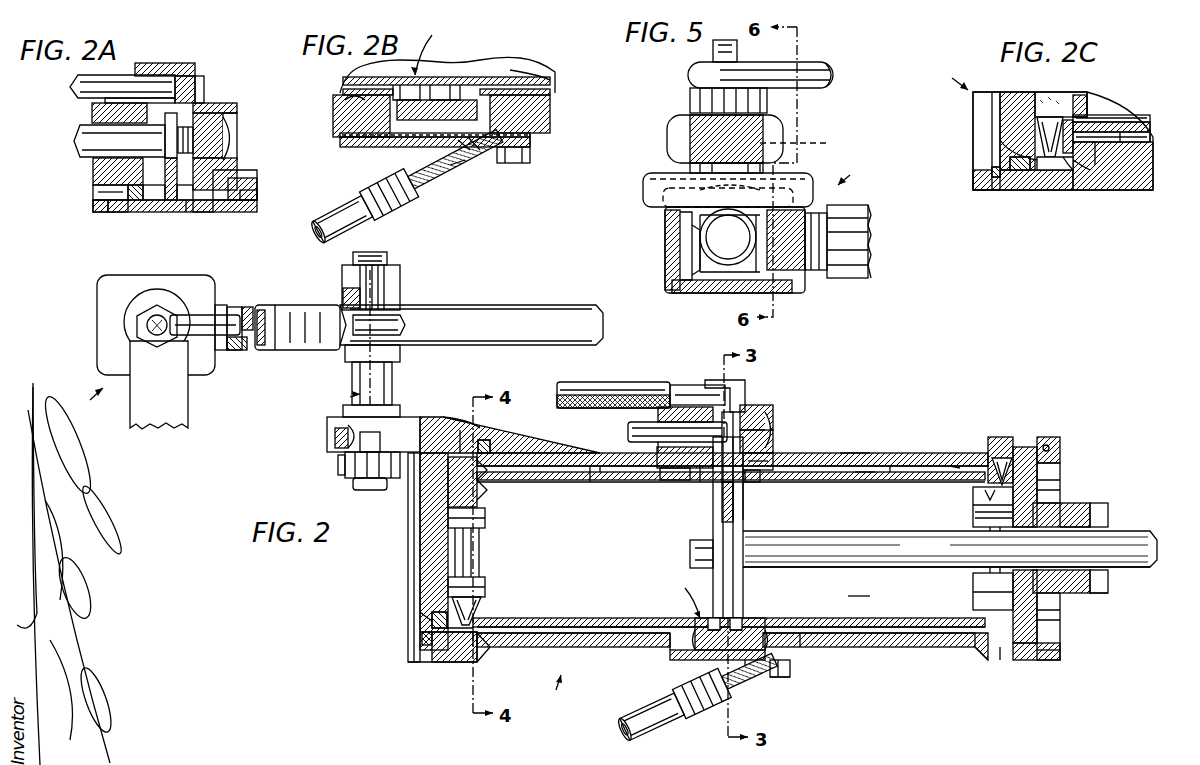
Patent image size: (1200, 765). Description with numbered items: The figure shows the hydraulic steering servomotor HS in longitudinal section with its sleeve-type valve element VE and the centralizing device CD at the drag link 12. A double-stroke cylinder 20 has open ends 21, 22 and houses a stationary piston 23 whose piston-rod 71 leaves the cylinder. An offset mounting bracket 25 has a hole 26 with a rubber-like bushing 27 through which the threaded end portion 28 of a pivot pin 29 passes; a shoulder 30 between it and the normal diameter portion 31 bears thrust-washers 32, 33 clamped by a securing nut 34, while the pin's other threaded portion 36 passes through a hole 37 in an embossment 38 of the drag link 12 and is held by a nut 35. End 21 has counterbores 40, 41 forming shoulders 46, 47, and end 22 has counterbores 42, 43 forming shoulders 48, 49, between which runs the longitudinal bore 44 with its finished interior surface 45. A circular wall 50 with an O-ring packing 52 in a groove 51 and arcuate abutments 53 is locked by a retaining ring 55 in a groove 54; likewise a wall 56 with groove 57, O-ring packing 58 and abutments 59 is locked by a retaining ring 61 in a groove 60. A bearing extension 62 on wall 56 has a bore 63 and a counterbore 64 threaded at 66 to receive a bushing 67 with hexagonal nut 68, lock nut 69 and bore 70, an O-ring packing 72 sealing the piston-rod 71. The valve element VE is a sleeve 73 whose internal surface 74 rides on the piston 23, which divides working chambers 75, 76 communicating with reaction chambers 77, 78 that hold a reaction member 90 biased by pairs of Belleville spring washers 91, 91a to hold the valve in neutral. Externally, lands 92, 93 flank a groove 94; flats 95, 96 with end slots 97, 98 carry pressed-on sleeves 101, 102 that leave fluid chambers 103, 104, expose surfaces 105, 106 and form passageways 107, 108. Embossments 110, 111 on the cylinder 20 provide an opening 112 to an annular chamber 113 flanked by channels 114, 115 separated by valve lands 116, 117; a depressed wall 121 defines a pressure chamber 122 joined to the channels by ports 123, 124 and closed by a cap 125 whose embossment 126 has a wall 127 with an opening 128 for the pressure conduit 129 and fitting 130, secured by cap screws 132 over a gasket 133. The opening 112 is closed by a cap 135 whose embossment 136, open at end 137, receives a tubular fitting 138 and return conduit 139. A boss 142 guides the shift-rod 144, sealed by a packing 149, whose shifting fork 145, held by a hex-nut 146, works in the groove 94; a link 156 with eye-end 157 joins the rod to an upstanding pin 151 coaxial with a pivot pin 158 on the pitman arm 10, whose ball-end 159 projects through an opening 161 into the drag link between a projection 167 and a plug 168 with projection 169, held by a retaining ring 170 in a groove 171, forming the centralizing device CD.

In FIG. 5, the steering pitman arm 10 is at (783, 130).
In FIG. 2, the steering pitman arm 10 is at (155, 428).
In FIG. 5, the drag link 12 is at (858, 245).
In FIG. 2, the drag link 12 is at (238, 350).
In FIG. 2, the double-stroke cylinder 20 is at (900, 645).
In FIG. 2C, the open end 21 is at (980, 100).
In FIG. 2, the open end 21 is at (411, 538).
In FIG. 2, the open end 22 is at (1060, 470).
In FIG. 2, the stationary piston 23 is at (743, 525).
In FIG. 2, the mounting bracket 25 is at (440, 417).
In FIG. 2, the hole 26 is at (345, 462).
In FIG. 2, the annular rubber-like bushing 27 is at (335, 438).
In FIG. 2, the reduced diameter threaded end portion 28 is at (362, 490).
In FIG. 2, the pivot pin 29 is at (345, 398).
In FIG. 2, the shoulder 30 is at (397, 405).
In FIG. 2, the normal diameter portion 31 is at (352, 374).
In FIG. 2, the thrust-washer 32 is at (327, 425).
In FIG. 2, the thrust-washer 33 is at (375, 452).
In FIG. 2, the securing nut 34 is at (340, 470).
In FIG. 2, the nut 35 is at (400, 276).
In FIG. 2, the reduced diameter threaded portion 36 is at (353, 258).
In FIG. 2, the hole 37 is at (350, 290).
In FIG. 2, the embossment 38 is at (395, 305).
In FIG. 2C, the counterbore 40 is at (980, 170).
In FIG. 2, the counterbore 40 is at (410, 650).
In FIG. 2C, the counterbore 41 is at (1068, 170).
In FIG. 2, the counterbore 41 is at (456, 660).
In FIG. 2, the counterbore 42 is at (1060, 452).
In FIG. 2, the counterbore 43 is at (1022, 447).
In FIG. 2, the longitudinal bore 44 is at (990, 455).
In FIG. 2C, the cylindrical interior surface 45 is at (1120, 155).
In FIG. 2, the cylindrical interior surface 45 is at (850, 455).
In FIG. 2C, the internal annular shoulder 46 is at (1020, 170).
In FIG. 2, the internal annular shoulder 46 is at (437, 648).
In FIG. 2C, the internal annular shoulder 47 is at (1080, 165).
In FIG. 2, the internal annular shoulder 47 is at (482, 650).
In FIG. 2, the internal annular shoulder 48 is at (1010, 660).
In FIG. 2, the internal annular shoulder 49 is at (980, 655).
In FIG. 2C, the circular closure wall 50 is at (1020, 92).
In FIG. 2, the circular closure wall 50 is at (432, 560).
In FIG. 2C, the annular groove 51 is at (1005, 133).
In FIG. 2, the annular groove 51 is at (440, 622).
In FIG. 2, the O-ring packing 52 is at (462, 417).
In FIG. 2C, the arcuately formed abutments 53 is at (1070, 92).
In FIG. 2, the arcuately formed abutments 53 is at (485, 521).
In FIG. 2, the internal annular groove 54 is at (455, 420).
In FIG. 2C, the split-type retaining ring 55 is at (993, 178).
In FIG. 2, the split-type retaining ring 55 is at (425, 638).
In FIG. 2, the circular closure wall 56 is at (1085, 505).
In FIG. 2, the annular groove 57 is at (1060, 630).
In FIG. 2, the O-ring packing 58 is at (1035, 660).
In FIG. 2, the arcuately formed abutments 59 is at (973, 505).
In FIG. 2, the internal annular groove 60 is at (1046, 445).
In FIG. 2, the split-type retaining ring 61 is at (1060, 650).
In FIG. 2, the bearing extension 62 is at (1075, 510).
In FIG. 2, the inner axial bore 63 is at (1012, 533).
In FIG. 2, the outer counterbore 64 is at (1070, 530).
In FIG. 2, the internal threads 66 is at (1075, 593).
In FIG. 2, the externally threaded bushing 67 is at (1108, 510).
In FIG. 2, the hexagonal nut 68 is at (1100, 593).
In FIG. 2, the lock nut 69 is at (1095, 595).
In FIG. 2, the bore 70 is at (1125, 533).
In FIG. 2, the piston-rod 71 is at (765, 567).
In FIG. 2, the O-ring packing 72 is at (985, 518).
In FIG. 2A, the cylindrical sleeve 73 is at (257, 208).
In FIG. 2C, the cylindrical sleeve 73 is at (1150, 140).
In FIG. 2, the cylindrical sleeve 73 is at (822, 482).
In FIG. 2C, the internal surface 74 is at (1135, 128).
In FIG. 2, the internal surface 74 is at (860, 627).
In FIG. 2, the working chamber 75 is at (548, 630).
In FIG. 2, the working chamber 76 is at (859, 587).
In FIG. 2C, the reaction chamber 77 is at (1045, 170).
In FIG. 2, the reaction chamber 77 is at (488, 440).
In FIG. 2, the reaction chamber 78 is at (1003, 468).
In FIG. 2C, the annular reaction member 90 is at (1068, 120).
In FIG. 2, the annular reaction member 90 is at (487, 492).
In FIG. 2C, the Belleville spring washers 91 is at (1050, 126).
In FIG. 2, the Belleville spring washers 91 is at (455, 600).
In FIG. 2, the Belleville spring washers 91a is at (993, 495).
In FIG. 2A, the external annular land 92 is at (170, 205).
In FIG. 2, the external annular land 92 is at (722, 500).
In FIG. 2A, the external annular land 93 is at (188, 200).
In FIG. 2, the external annular land 93 is at (743, 490).
In FIG. 2A, the external annular groove 94 is at (180, 205).
In FIG. 2B, the external annular groove 94 is at (425, 88).
In FIG. 2, the external annular groove 94 is at (733, 505).
In FIG. 2A, the flats 95 is at (100, 206).
In FIG. 2C, the flats 95 is at (1110, 122).
In FIG. 2, the flats 95 is at (700, 478).
In FIG. 2, the flats 96 is at (895, 472).
In FIG. 2C, the end slot 97 is at (1085, 110).
In FIG. 2, the end slot 97 is at (480, 618).
In FIG. 2, the end slot 98 is at (995, 460).
In FIG. 2B, the cylindrical sleeve 101 is at (550, 92).
In FIG. 2C, the cylindrical sleeve 101 is at (1152, 140).
In FIG. 2, the cylindrical sleeve 101 is at (625, 628).
In FIG. 2A, the cylindrical sleeve 102 is at (257, 198).
In FIG. 2, the cylindrical sleeve 102 is at (815, 647).
In FIG. 2B, the annular fluid chamber 103 is at (395, 88).
In FIG. 2, the annular fluid chamber 103 is at (705, 622).
In FIG. 2B, the annular fluid chamber 104 is at (470, 77).
In FIG. 2, the annular fluid chamber 104 is at (745, 625).
In FIG. 2A, the external cylindrical surface 105 is at (135, 196).
In FIG. 2B, the external cylindrical surface 105 is at (530, 80).
In FIG. 2C, the external cylindrical surface 105 is at (1110, 163).
In FIG. 2, the external cylindrical surface 105 is at (590, 480).
In FIG. 2, the external cylindrical surface 106 is at (955, 468).
In FIG. 2A, the fluid passageway 107 is at (118, 208).
In FIG. 2C, the fluid passageway 107 is at (1100, 160).
In FIG. 2, the fluid passageway 107 is at (598, 470).
In FIG. 2, the fluid passageway 108 is at (860, 480).
In FIG. 2A, the exterior embossment 110 is at (92, 115).
In FIG. 2, the exterior embossment 110 is at (645, 384).
In FIG. 2B, the exterior embossment 111 is at (360, 120).
In FIG. 2, the exterior embossment 111 is at (675, 655).
In FIG. 2A, the opening 112 is at (232, 170).
In FIG. 2, the opening 112 is at (773, 440).
In FIG. 2B, the internal annular fluid chamber 113 is at (470, 138).
In FIG. 2A, the annular internal fluid channel 114 is at (110, 170).
In FIG. 2, the annular internal fluid channel 114 is at (690, 470).
In FIG. 2A, the annular internal fluid channel 115 is at (257, 183).
In FIG. 2, the annular internal fluid channel 115 is at (773, 458).
In FIG. 2A, the internal annular valve land 116 is at (150, 206).
In FIG. 2A, the internal annular valve land 117 is at (210, 205).
In FIG. 2, the internal annular valve land 117 is at (755, 481).
In FIG. 2B, the depressed bottom wall 121 is at (437, 120).
In FIG. 2B, the variable volume pressure chamber 122 is at (460, 142).
In FIG. 2, the variable volume pressure chamber 122 is at (745, 662).
In FIG. 2B, the port 123 is at (345, 105).
In FIG. 2, the port 123 is at (695, 635).
In FIG. 2B, the port 124 is at (505, 97).
In FIG. 2, the port 124 is at (770, 640).
In FIG. 2B, the flanged closure cap 125 is at (345, 143).
In FIG. 2B, the angular embossment 126 is at (452, 168).
In FIG. 2B, the vertical wall 127 is at (412, 190).
In FIG. 2, the vertical wall 127 is at (725, 690).
In FIG. 2B, the opening 128 is at (365, 175).
In FIG. 2, the opening 128 is at (680, 715).
In FIG. 2B, the flexible conduit 129 is at (335, 215).
In FIG. 2, the flexible conduit 129 is at (615, 730).
In FIG. 2B, the hydraulic fitting 130 is at (385, 205).
In FIG. 2, the hydraulic fitting 130 is at (652, 700).
In FIG. 2B, the cap screws 132 is at (528, 158).
In FIG. 2, the cap screws 132 is at (785, 677).
In FIG. 2B, the gasket 133 is at (530, 137).
In FIG. 2, the gasket 133 is at (790, 668).
In FIG. 2A, the closure cap 135 is at (200, 78).
In FIG. 2, the closure cap 135 is at (745, 383).
In FIG. 2A, the extruded embossment 136 is at (158, 63).
In FIG. 2A, the open end 137 is at (130, 76).
In FIG. 2, the open end 137 is at (712, 385).
In FIG. 2A, the rigid tubular fitting 138 is at (187, 76).
In FIG. 2, the flexible hydraulic conduit 139 is at (565, 408).
In FIG. 2A, the boss 142 is at (105, 190).
In FIG. 2, the boss 142 is at (672, 472).
In FIG. 2A, the shift-rod 144 is at (74, 143).
In FIG. 2, the shift-rod 144 is at (440, 324).
In FIG. 2A, the shifting fork 145 is at (172, 118).
In FIG. 2, the shifting fork 145 is at (735, 415).
In FIG. 2A, the hex-nut 146 is at (190, 125).
In FIG. 2, the hex-nut 146 is at (770, 420).
In FIG. 2, the annular packing 149 is at (660, 452).
In FIG. 5, the upstanding pin 151 is at (737, 48).
In FIG. 2, the upstanding pin 151 is at (154, 326).
In FIG. 5, the link 156 is at (822, 62).
In FIG. 2, the link 156 is at (200, 315).
In FIG. 5, the eye-end 157 is at (688, 78).
In FIG. 2, the eye-end 157 is at (147, 330).
In FIG. 5, the pivot pin 158 is at (812, 139).
In FIG. 5, the ball-end 159 is at (725, 262).
In FIG. 5, the opening 161 is at (675, 180).
In FIG. 5, the coaxial projection 167 is at (795, 213).
In FIG. 5, the removable plug 168 is at (685, 215).
In FIG. 5, the coaxial projection 169 is at (695, 240).
In FIG. 5, the split retaining ring 170 is at (667, 256).
In FIG. 5, the internal annular groove 171 is at (680, 290).
In FIG. 5, the centralizing device CD is at (858, 172).
In FIG. 2, the centralizing device CD is at (146, 342).
In FIG. 2C, the hydraulic steering servomotor HS is at (951, 74).
In FIG. 2, the hydraulic steering servomotor HS is at (557, 691).
In FIG. 2B, the sleeve-type valve element VE is at (433, 45).
In FIG. 2, the sleeve-type valve element VE is at (684, 594).